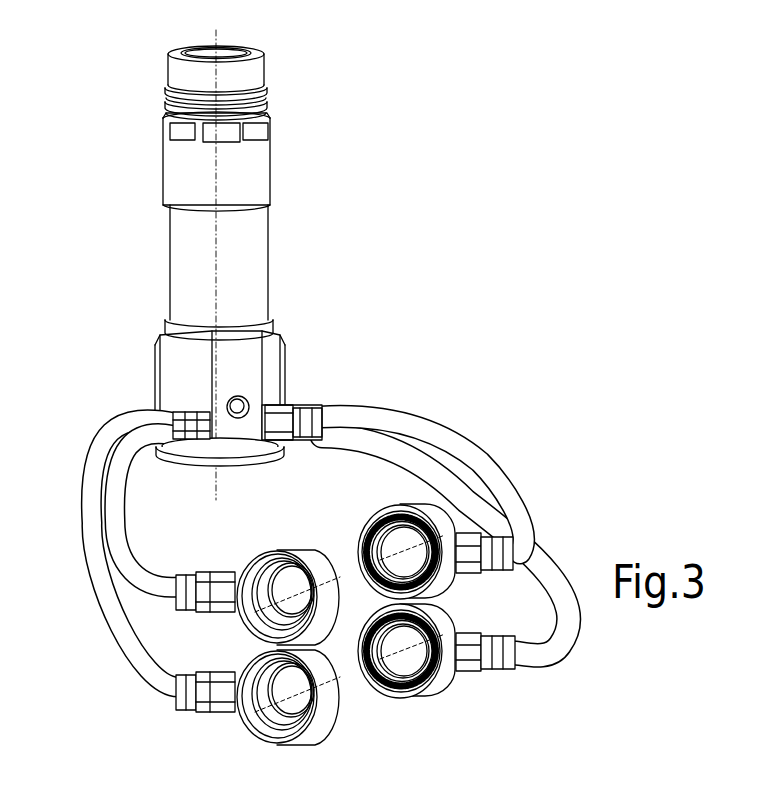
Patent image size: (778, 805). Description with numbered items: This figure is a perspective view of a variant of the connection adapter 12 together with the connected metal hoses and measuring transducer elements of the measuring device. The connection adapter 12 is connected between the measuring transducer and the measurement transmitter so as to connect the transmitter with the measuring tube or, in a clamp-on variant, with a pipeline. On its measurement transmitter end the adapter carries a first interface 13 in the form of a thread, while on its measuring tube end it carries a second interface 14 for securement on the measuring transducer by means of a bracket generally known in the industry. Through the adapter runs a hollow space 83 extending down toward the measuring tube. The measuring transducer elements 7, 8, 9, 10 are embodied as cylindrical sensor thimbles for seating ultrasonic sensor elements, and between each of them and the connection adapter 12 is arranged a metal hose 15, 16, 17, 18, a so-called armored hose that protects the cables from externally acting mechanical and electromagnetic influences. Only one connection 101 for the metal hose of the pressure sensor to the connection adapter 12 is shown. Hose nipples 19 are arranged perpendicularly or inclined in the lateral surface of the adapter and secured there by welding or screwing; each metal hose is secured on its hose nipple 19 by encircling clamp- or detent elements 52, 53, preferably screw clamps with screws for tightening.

The measuring transducer element 7 is at (440, 683).
The measuring transducer element 8 is at (327, 612).
The measuring transducer element 9 is at (325, 720).
The measuring transducer element 10 is at (426, 508).
The connection adapter 12 is at (332, 237).
The first interface 13 is at (268, 62).
The second interface 14 is at (263, 460).
The metal hose 15 is at (520, 492).
The metal hose 16 is at (486, 494).
The metal hose 17 is at (100, 600).
The metal hose 18 is at (112, 518).
The hose nipple 19 is at (280, 407).
The clamp- or detent element 52 is at (287, 441).
The clamp- or detent element 53 is at (310, 433).
The hollow space 83 is at (235, 48).
The connection 101 is at (250, 397).